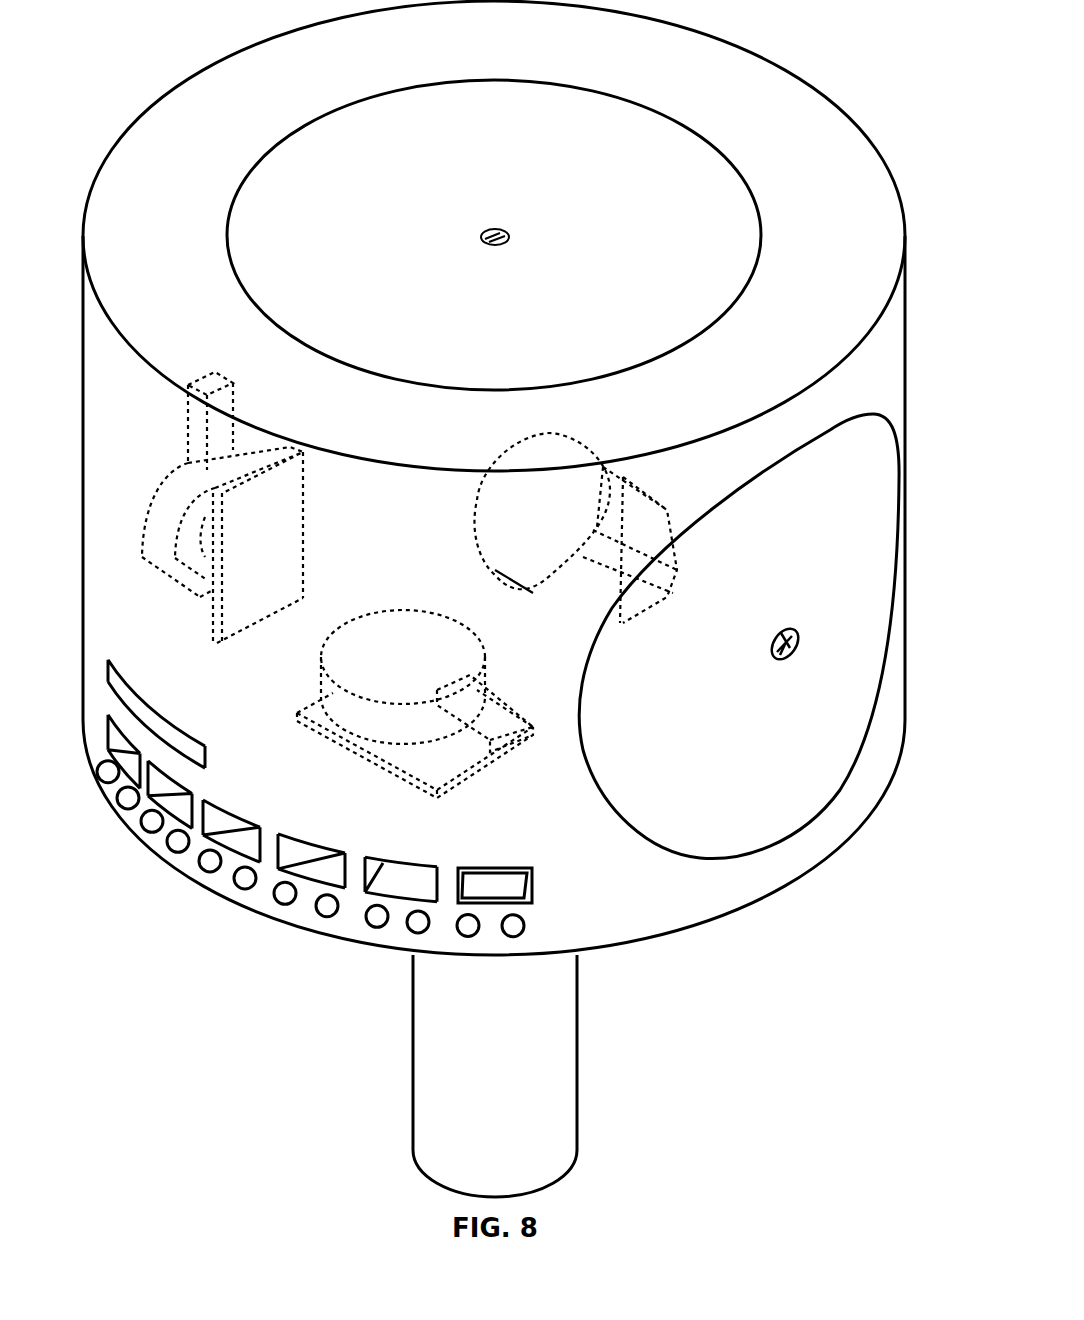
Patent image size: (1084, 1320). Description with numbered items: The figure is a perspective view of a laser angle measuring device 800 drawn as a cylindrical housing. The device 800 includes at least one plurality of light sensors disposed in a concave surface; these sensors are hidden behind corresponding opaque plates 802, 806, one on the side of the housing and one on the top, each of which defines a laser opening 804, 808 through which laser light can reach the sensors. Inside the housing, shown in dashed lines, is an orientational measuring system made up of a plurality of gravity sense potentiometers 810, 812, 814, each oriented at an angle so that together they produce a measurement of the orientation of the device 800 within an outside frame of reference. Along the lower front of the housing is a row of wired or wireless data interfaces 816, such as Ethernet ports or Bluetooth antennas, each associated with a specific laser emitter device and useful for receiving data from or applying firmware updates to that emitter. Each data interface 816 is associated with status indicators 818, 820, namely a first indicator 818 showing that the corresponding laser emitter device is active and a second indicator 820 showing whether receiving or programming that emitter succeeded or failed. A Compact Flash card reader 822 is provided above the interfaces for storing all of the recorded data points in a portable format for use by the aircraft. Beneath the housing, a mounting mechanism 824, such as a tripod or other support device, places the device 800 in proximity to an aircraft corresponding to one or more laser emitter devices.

The laser angle measuring device 800 is at (162, 109).
The opaque plate 802 is at (884, 524).
The laser opening 804 is at (800, 640).
The opaque plate 806 is at (689, 165).
The laser opening 808 is at (505, 238).
The gravity sense potentiometer 810 is at (175, 560).
The gravity sense potentiometer 812 is at (487, 710).
The gravity sense potentiometer 814 is at (483, 509).
The data interface 816 is at (242, 828).
The first indicator 818 is at (105, 768).
The second indicator 820 is at (422, 920).
The Compact Flash card reader 822 is at (197, 750).
The mounting mechanism 824 is at (572, 1075).